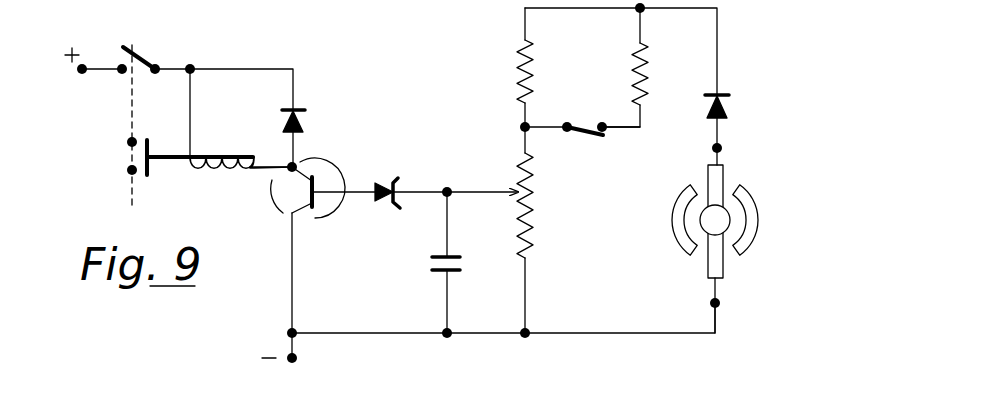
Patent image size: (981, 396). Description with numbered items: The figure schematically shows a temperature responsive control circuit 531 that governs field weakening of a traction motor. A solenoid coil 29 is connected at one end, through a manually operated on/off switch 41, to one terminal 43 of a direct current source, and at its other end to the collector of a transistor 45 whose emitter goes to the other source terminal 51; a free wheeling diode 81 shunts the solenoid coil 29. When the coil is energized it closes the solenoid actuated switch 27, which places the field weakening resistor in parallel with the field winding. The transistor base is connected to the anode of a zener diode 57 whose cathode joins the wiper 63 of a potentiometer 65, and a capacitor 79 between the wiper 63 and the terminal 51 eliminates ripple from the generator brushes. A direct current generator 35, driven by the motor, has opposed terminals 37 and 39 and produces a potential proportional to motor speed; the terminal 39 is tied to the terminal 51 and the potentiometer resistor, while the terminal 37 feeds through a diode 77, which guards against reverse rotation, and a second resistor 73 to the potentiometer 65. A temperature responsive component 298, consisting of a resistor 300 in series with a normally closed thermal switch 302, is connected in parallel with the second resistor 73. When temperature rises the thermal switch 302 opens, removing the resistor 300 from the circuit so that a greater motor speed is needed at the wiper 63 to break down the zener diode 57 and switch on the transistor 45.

The on/off switch 41 is at (148, 60).
The terminal 43 is at (80, 73).
The solenoid actuated switch 27 is at (118, 163).
The solenoid coil 29 is at (218, 152).
The free wheeling diode 81 is at (305, 120).
The transistor 45 is at (267, 210).
The zener diode 57 is at (387, 208).
The wiper 63 is at (513, 187).
The capacitor 79 is at (433, 265).
The temperature responsive control circuit 531 is at (442, 122).
The second resistor 73 is at (525, 47).
The resistor 300 is at (647, 50).
The thermal switch 302 is at (583, 127).
The temperature responsive component 298 is at (623, 137).
The potentiometer 65 is at (533, 230).
The diode 77 is at (730, 104).
The terminal 37 is at (722, 147).
The direct current generator 35 is at (767, 210).
The terminal 39 is at (722, 302).
The terminal 51 is at (298, 357).